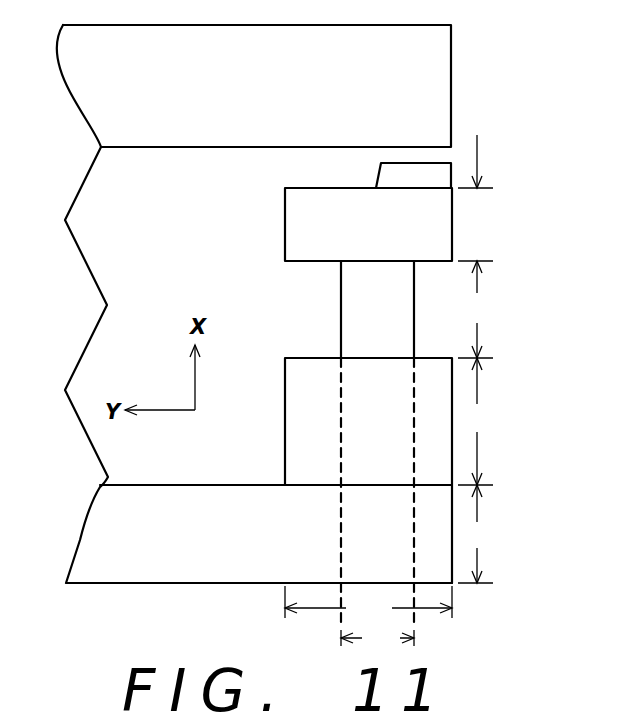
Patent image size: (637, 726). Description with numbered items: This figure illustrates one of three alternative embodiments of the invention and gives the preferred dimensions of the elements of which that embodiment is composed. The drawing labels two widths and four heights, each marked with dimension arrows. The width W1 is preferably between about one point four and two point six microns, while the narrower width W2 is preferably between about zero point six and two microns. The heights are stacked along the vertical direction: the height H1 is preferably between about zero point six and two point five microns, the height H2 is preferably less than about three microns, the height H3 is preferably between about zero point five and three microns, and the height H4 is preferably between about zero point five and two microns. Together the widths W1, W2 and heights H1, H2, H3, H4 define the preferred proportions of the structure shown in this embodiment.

The height dimension H1 is at (480, 536).
The height dimension H2 is at (480, 419).
The height dimension H3 is at (480, 309).
The height dimension H4 is at (480, 226).
The width dimension W1 is at (368, 603).
The width dimension W2 is at (377, 638).